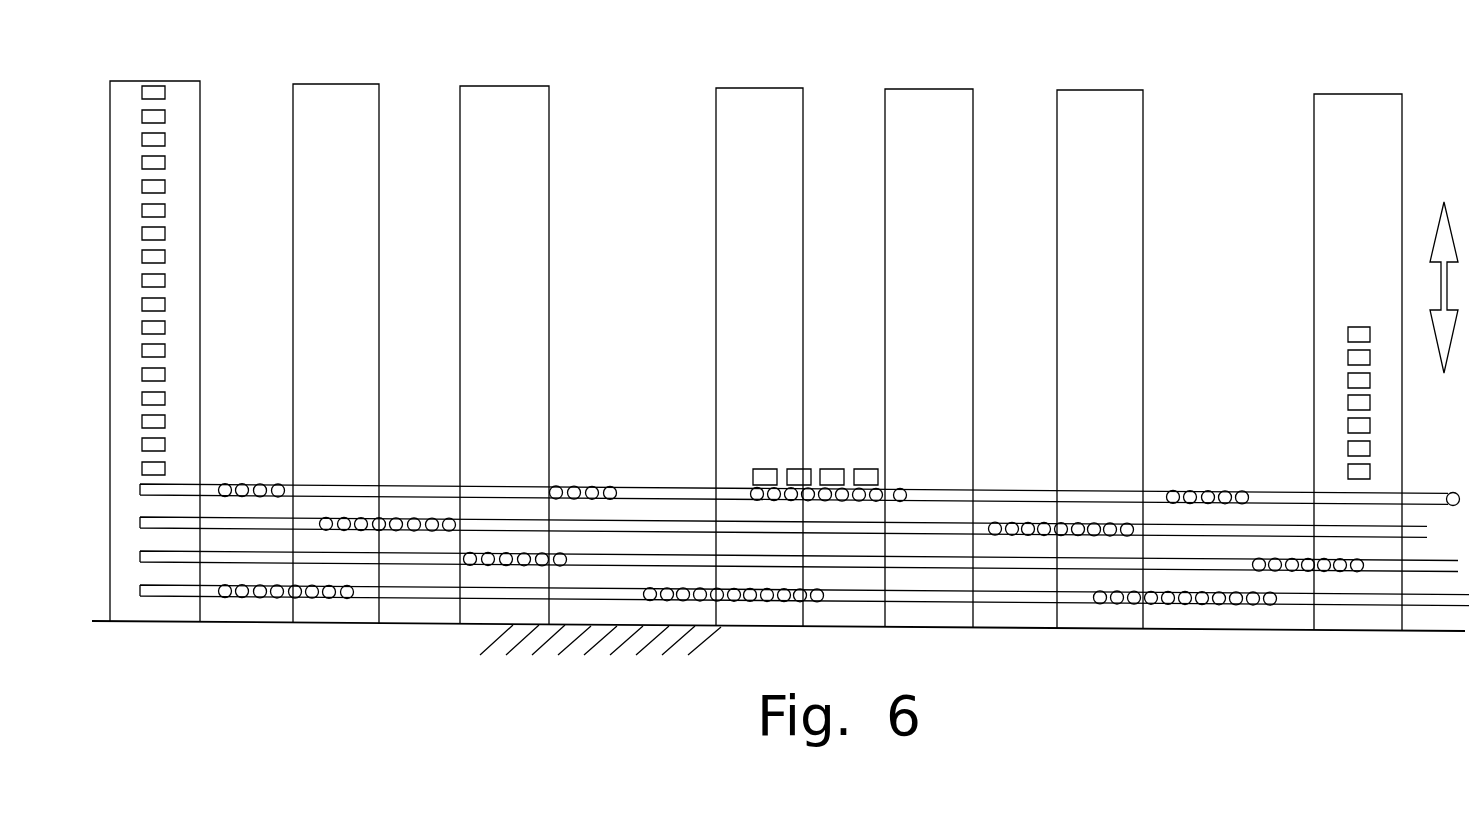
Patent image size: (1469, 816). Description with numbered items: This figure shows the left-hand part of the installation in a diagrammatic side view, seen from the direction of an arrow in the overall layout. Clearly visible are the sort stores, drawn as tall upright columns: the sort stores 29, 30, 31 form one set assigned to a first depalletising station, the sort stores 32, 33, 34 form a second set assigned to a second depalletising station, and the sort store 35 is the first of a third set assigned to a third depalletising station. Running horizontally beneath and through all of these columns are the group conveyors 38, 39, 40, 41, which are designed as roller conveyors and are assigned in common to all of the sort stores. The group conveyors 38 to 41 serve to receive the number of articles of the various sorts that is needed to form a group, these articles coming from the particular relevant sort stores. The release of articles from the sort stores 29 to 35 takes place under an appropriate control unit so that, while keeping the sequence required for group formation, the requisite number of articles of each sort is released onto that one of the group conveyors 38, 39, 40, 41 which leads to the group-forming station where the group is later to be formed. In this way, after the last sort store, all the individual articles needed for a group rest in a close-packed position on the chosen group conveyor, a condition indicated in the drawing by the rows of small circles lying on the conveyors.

The sort store 29 is at (177, 103).
The sort store 30 is at (338, 95).
The sort store 31 is at (505, 100).
The sort store 32 is at (765, 100).
The sort store 33 is at (925, 102).
The sort store 34 is at (1100, 108).
The sort store 35 is at (1355, 102).
The group conveyor 38 is at (627, 492).
The group conveyor 39 is at (627, 522).
The group conveyor 40 is at (632, 558).
The group conveyor 41 is at (587, 595).